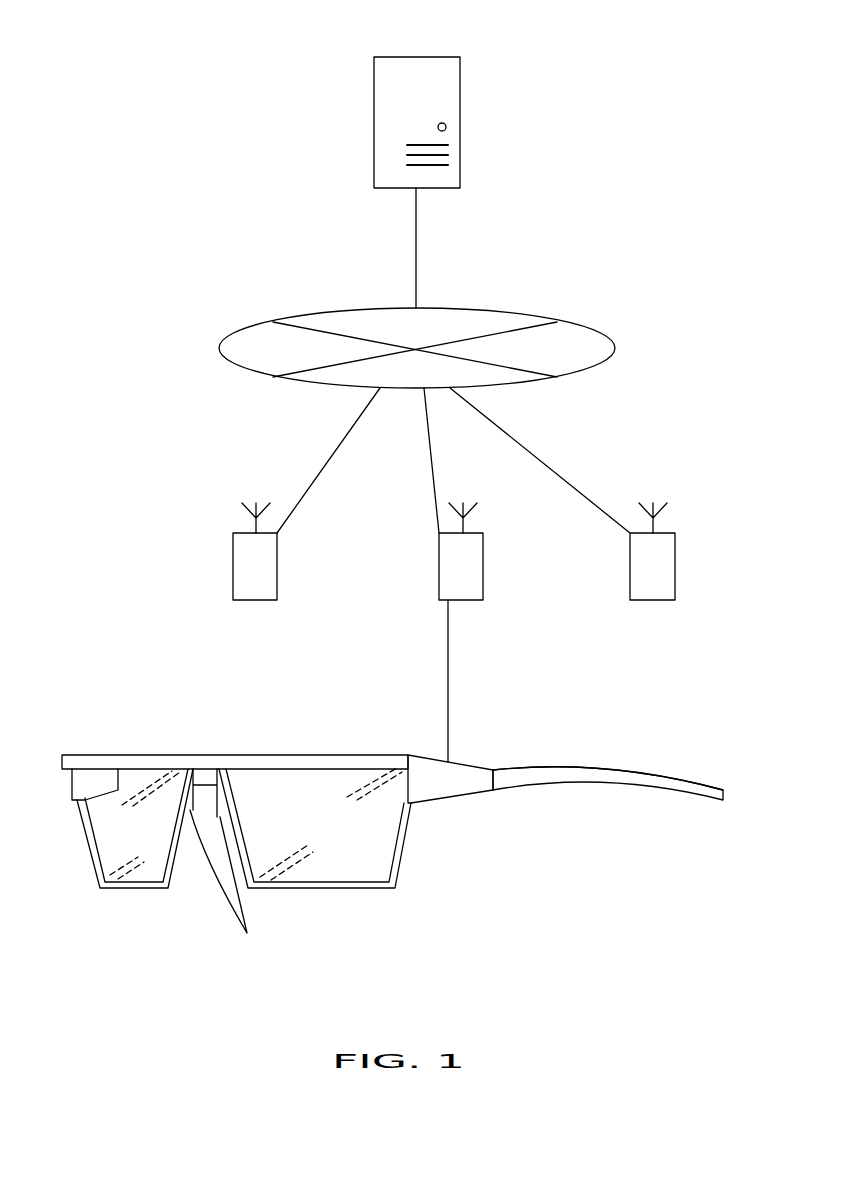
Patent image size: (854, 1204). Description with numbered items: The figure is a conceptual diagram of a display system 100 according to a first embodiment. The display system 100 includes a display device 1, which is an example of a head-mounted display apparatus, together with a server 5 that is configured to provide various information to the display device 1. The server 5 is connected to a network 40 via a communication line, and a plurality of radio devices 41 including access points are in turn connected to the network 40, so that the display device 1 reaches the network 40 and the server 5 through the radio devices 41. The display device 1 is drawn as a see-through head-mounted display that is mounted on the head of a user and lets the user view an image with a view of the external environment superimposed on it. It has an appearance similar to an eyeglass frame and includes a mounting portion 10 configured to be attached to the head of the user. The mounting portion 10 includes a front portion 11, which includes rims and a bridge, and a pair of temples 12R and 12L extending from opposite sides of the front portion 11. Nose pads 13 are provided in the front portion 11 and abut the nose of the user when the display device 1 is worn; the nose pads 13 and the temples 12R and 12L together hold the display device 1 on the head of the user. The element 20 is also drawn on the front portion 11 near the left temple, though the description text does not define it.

The display system 100 is at (545, 46).
The server 5 is at (461, 69).
The network 40 is at (579, 322).
The radio devices 41 is at (278, 567).
The display device 1 is at (702, 764).
The mounting portion 10 is at (658, 766).
The front portion 11 is at (347, 760).
The temple 12R is at (207, 776).
The temple 12L is at (586, 777).
The nose pads 13 is at (227, 888).
The display unit 20 is at (455, 770).